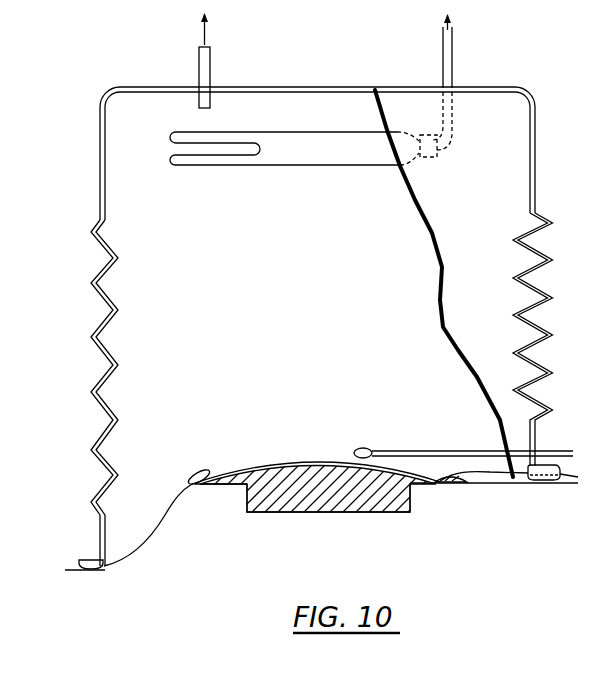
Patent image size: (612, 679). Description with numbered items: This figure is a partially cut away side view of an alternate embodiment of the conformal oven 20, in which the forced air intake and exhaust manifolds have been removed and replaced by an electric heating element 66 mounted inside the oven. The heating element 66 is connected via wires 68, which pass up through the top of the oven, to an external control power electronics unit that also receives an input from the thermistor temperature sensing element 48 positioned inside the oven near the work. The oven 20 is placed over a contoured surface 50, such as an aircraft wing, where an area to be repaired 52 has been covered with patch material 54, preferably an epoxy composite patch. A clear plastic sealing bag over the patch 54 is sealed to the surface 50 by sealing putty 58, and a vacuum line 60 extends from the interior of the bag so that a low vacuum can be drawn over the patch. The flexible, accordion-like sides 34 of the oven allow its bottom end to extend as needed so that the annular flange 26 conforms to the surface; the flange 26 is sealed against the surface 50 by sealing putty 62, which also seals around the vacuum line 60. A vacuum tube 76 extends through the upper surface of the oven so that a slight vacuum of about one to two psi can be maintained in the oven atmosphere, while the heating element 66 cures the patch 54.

The conformal oven 20 is at (95, 80).
The annular lip or flange 26 is at (89, 556).
The flexible accordion-like sides 34 is at (91, 258).
The thermistor temperature sensing element 48 is at (372, 447).
The contoured surface 50 is at (224, 517).
The area to be repaired 52 is at (415, 509).
The patch material 54 is at (344, 503).
The sealing putty 58 is at (197, 470).
The vacuum line 60 is at (488, 483).
The sealing putty 62 is at (92, 572).
The electric heating element 66 is at (284, 131).
The wires 68 is at (443, 52).
The vacuum tube 76 is at (199, 77).